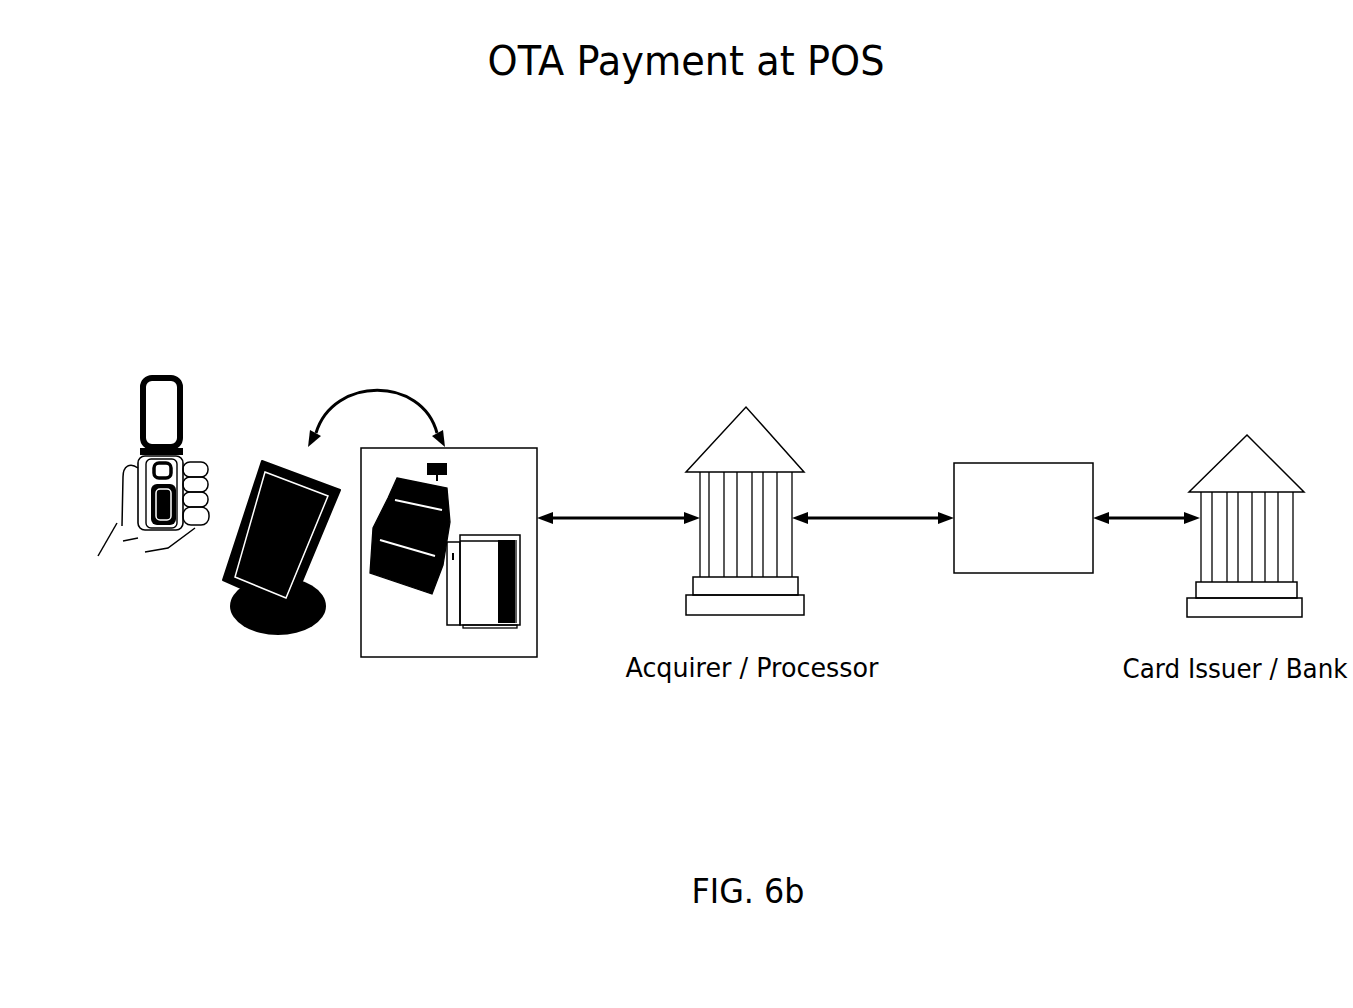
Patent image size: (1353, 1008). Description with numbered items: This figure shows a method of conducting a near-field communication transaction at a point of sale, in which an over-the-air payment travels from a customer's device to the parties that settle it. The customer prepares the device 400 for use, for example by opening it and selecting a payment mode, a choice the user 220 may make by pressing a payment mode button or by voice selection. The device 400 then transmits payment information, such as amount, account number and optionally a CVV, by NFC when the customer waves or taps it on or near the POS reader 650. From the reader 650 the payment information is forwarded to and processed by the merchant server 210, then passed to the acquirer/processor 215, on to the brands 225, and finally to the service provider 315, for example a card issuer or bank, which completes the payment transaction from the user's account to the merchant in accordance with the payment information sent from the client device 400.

The device 400 is at (182, 388).
The user 220 is at (205, 463).
The POS reader 650 is at (287, 638).
The merchant server 210 is at (520, 448).
The acquirer/processor 215 is at (708, 450).
The brands 225 is at (1032, 462).
The service provider 315 is at (1218, 465).